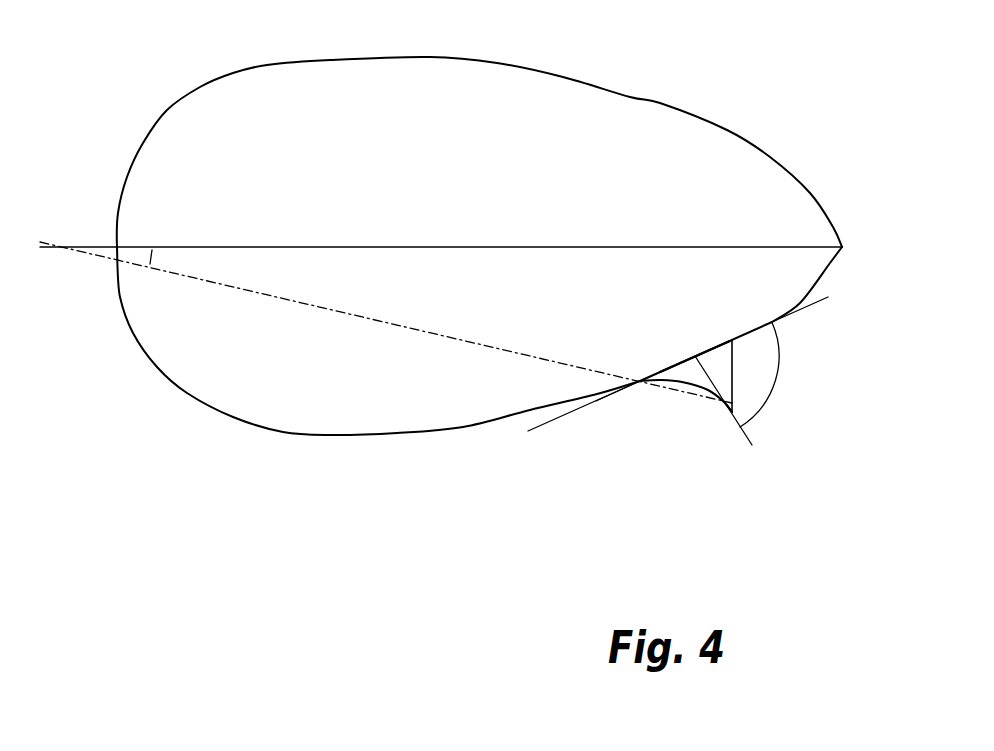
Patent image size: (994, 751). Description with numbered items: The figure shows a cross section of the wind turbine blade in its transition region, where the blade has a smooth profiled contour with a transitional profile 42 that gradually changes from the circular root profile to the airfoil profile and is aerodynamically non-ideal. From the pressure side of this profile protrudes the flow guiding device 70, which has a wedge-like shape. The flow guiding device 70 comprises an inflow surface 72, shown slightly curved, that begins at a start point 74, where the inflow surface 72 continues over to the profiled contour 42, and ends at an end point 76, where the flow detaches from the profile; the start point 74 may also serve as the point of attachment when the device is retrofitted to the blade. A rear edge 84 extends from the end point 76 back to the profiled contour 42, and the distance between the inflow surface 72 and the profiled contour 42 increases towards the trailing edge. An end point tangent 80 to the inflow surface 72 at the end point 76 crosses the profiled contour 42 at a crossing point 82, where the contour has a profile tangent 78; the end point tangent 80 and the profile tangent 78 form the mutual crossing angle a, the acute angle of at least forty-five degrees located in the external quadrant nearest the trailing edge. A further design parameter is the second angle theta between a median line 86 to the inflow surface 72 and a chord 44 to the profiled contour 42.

The transitional profile 42 is at (727, 129).
The chord 44 is at (427, 247).
The median line 86 is at (352, 313).
The profile tangent 78 is at (552, 428).
The flow guiding device 70 is at (723, 365).
The crossing point 82 is at (695, 357).
The inflow surface 72 is at (678, 382).
The start point 74 is at (602, 399).
The end point 76 is at (730, 413).
The end point tangent 80 is at (752, 442).
The rear edge 84 is at (733, 373).